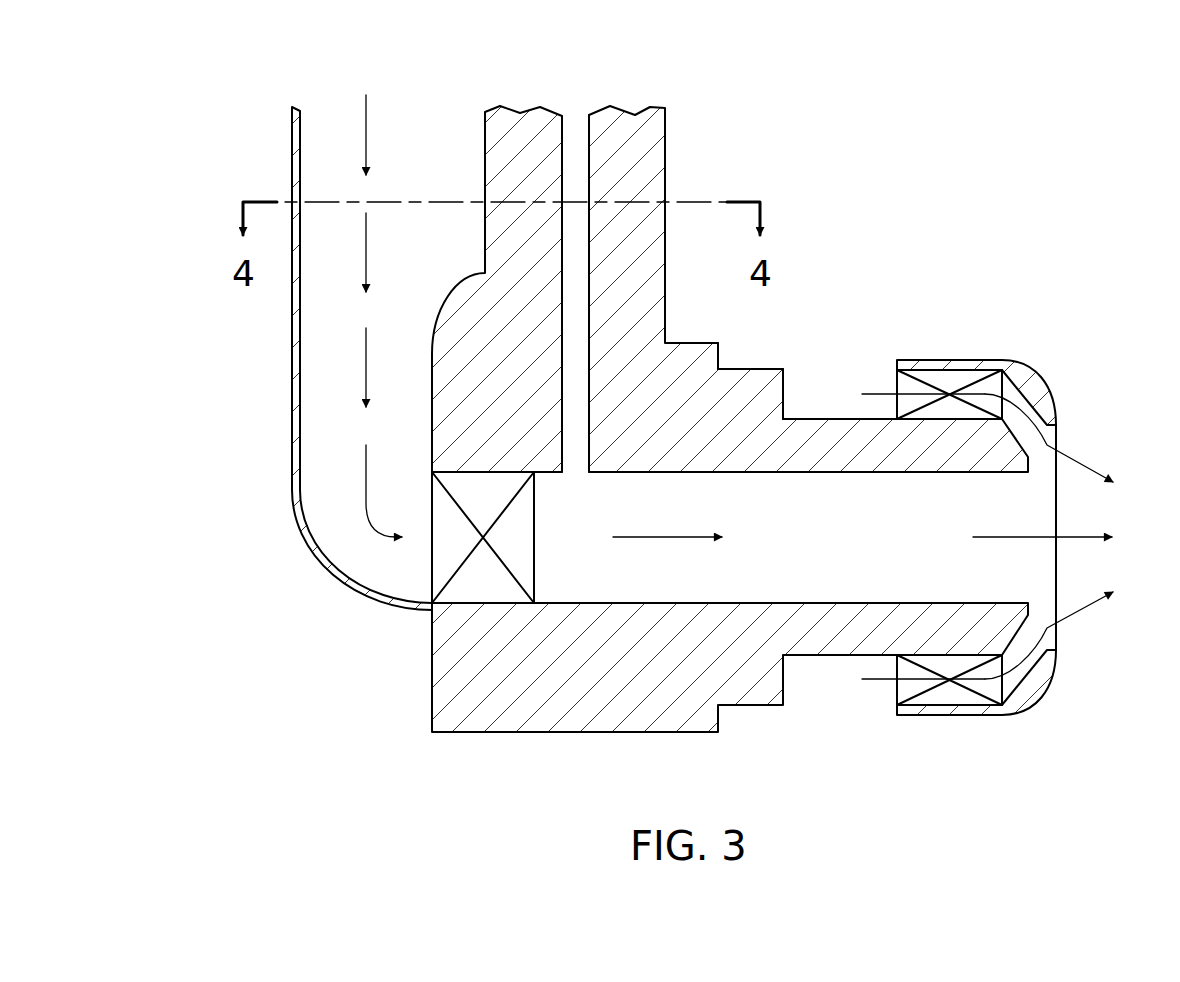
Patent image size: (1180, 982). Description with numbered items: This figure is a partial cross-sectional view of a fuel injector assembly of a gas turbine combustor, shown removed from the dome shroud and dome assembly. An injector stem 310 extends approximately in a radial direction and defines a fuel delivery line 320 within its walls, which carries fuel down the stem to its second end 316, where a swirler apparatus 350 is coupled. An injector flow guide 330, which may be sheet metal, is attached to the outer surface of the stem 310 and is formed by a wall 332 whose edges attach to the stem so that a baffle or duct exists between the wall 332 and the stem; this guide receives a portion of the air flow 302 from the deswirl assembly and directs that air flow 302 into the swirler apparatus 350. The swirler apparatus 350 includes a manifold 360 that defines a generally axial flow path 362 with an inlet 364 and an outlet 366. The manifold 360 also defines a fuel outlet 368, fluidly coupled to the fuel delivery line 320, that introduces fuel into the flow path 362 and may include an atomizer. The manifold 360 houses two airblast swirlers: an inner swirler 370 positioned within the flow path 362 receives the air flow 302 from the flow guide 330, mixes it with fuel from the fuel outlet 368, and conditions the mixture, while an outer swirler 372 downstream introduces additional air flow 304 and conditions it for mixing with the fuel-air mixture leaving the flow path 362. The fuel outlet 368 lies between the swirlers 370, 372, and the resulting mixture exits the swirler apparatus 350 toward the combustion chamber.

The air flow 302 is at (366, 135).
The additional air flow 304 is at (1085, 465).
The injector stem 310 is at (665, 135).
The second end 316 is at (665, 290).
The fuel delivery line 320 is at (576, 125).
The injector flow guide 330 is at (280, 339).
The wall 332 is at (292, 445).
The swirler apparatus 350 is at (730, 455).
The manifold 360 is at (760, 377).
The flow path 362 is at (828, 586).
The inlet 364 is at (437, 578).
The outlet 366 is at (1045, 517).
The fuel outlet 368 is at (572, 465).
The inner swirler 370 is at (534, 565).
The outer swirler 372 is at (897, 377).